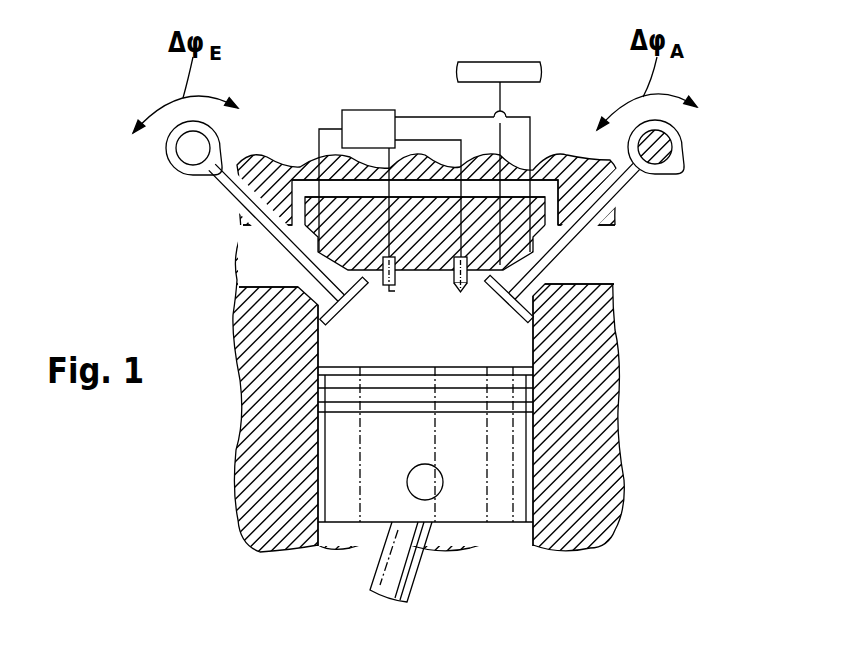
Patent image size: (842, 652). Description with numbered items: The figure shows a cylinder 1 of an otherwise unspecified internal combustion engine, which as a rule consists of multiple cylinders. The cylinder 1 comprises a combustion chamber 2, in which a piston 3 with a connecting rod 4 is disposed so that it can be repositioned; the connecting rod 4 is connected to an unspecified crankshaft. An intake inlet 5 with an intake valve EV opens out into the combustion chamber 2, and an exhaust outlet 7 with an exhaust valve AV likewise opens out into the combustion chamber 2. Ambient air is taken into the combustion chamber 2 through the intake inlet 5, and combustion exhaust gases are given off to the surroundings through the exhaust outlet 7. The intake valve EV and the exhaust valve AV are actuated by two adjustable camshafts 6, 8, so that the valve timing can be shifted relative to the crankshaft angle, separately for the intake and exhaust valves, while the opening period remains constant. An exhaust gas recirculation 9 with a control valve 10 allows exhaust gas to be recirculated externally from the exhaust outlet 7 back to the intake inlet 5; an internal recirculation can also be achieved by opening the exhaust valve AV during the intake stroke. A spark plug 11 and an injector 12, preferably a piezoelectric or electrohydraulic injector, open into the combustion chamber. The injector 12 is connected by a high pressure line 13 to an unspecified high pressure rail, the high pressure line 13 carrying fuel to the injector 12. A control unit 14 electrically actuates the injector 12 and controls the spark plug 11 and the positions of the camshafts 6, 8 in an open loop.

The cylinder 1 is at (655, 396).
The combustion chamber 2 is at (328, 342).
The piston 3 is at (468, 497).
The connecting rod 4 is at (398, 565).
The intake inlet 5 is at (294, 299).
The adjustable camshaft 6 is at (190, 148).
The exhaust outlet 7 is at (557, 297).
The adjustable camshaft 8 is at (660, 143).
The exhaust gas recirculation 9 is at (547, 187).
The control valve 10 is at (421, 191).
The spark plug 11 is at (392, 268).
The injector 12 is at (460, 273).
The high pressure line 13 is at (500, 92).
The control unit 14 is at (368, 127).